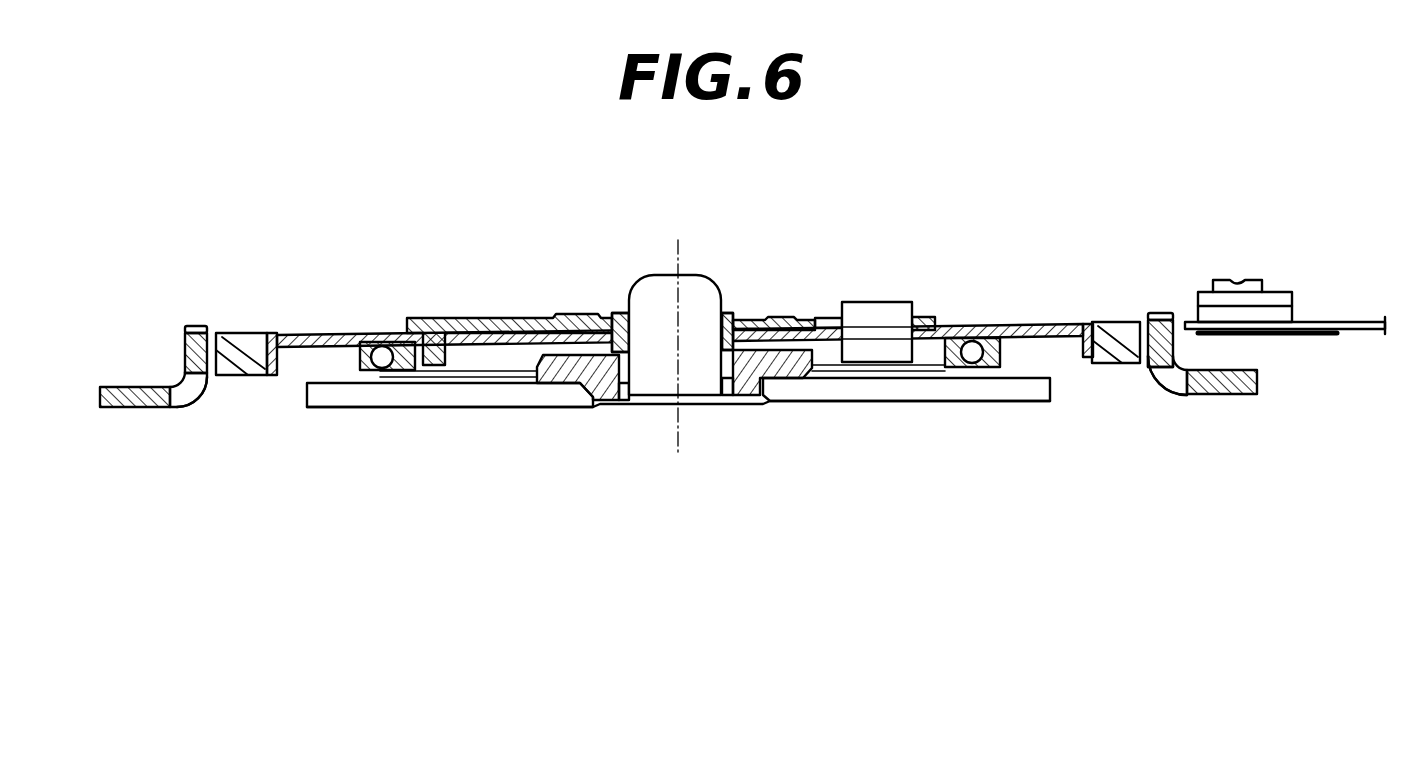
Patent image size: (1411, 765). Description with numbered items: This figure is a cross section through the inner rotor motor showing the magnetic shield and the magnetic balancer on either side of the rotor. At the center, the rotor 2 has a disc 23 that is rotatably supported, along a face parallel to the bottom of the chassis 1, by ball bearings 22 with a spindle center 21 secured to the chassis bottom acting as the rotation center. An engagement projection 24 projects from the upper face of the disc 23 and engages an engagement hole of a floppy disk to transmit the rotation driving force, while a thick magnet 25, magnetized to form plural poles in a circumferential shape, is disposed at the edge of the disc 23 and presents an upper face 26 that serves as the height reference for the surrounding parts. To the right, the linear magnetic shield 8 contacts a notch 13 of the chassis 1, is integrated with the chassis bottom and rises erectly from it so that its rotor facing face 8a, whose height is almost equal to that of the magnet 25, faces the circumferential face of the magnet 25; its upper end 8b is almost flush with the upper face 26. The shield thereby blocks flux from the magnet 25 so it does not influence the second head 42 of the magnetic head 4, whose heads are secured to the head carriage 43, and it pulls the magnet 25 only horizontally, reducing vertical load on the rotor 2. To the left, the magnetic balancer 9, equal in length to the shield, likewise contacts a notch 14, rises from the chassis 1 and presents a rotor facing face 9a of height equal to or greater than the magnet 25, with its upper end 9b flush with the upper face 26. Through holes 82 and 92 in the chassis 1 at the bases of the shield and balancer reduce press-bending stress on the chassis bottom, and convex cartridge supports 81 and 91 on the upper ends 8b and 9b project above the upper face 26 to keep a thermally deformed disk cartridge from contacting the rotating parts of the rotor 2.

The chassis 1 is at (143, 410).
The rotor 2 is at (519, 302).
The magnetic head 4 is at (1285, 264).
The magnetic shield 8 is at (1168, 393).
The rotor facing face 8a is at (1147, 372).
The upper end 8b is at (1160, 314).
The magnetic balancer 9 is at (199, 394).
The rotor facing face 9a is at (215, 383).
The upper end 9b is at (193, 328).
The notch 13 is at (1055, 402).
The notch 14 is at (303, 398).
The spindle center 21 is at (678, 268).
The ball bearings 22 is at (384, 368).
The disc 23 is at (343, 333).
The engagement projection 24 is at (876, 305).
The magnet 25 is at (268, 333).
The upper face 26 is at (243, 333).
The second head 42 is at (1228, 278).
The head carriage 43 is at (1350, 320).
The cartridge support 81 is at (1150, 315).
The through hole 82 is at (1180, 400).
The cartridge support 91 is at (198, 325).
The through hole 92 is at (178, 410).